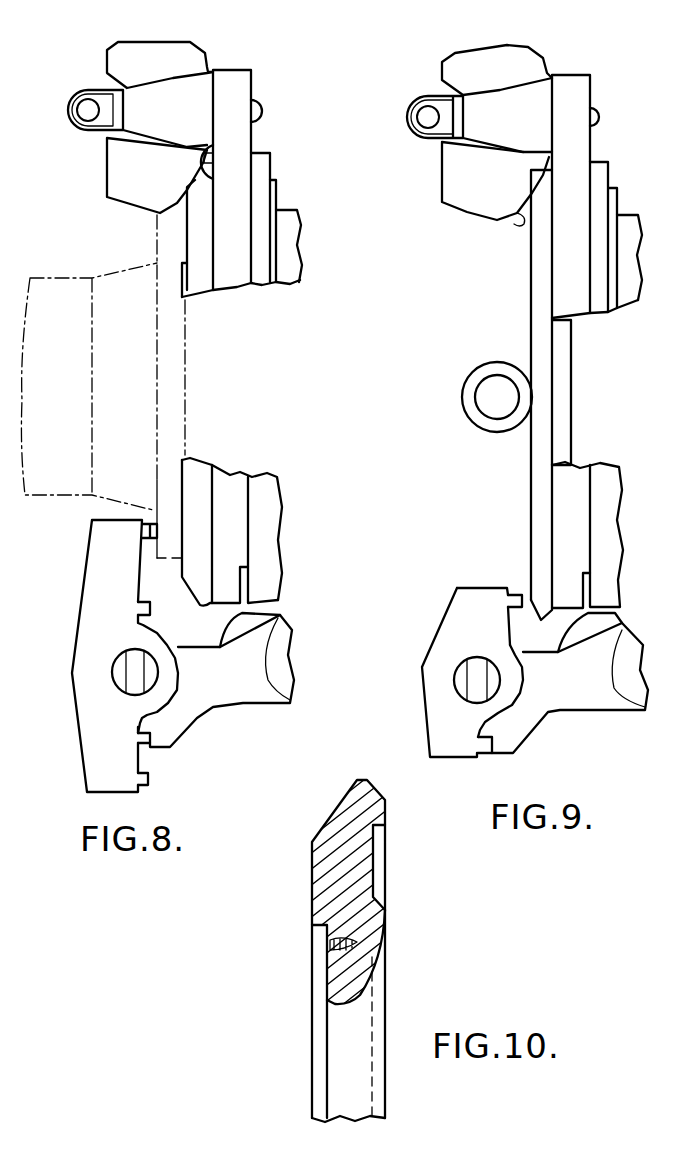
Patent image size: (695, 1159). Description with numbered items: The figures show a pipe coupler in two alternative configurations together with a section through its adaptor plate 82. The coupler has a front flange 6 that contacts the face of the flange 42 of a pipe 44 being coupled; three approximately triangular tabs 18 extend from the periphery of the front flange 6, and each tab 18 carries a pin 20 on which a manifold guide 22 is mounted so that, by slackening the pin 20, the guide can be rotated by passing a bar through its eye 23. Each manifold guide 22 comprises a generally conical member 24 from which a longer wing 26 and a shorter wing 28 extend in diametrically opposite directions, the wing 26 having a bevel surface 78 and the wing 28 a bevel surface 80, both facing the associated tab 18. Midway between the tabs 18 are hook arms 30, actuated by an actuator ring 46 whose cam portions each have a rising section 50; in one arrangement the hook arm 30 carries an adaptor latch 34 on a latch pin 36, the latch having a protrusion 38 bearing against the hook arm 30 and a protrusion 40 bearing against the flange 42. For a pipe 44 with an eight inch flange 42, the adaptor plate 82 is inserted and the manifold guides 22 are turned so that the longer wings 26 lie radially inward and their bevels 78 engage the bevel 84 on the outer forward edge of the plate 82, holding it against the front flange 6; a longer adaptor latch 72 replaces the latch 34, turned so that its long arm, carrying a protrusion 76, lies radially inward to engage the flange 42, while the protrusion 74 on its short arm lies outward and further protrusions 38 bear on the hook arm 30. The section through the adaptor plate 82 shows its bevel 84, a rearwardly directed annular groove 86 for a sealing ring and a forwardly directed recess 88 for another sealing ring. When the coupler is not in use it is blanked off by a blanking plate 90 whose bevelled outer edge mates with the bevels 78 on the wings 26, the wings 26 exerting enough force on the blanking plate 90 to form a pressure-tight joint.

In FIG. 8, the front flange 6 is at (223, 558).
In FIG. 9, the front flange 6 is at (567, 540).
In FIG. 8, the tab 18 is at (233, 80).
In FIG. 9, the tab 18 is at (573, 80).
In FIG. 8, the pin 20 is at (260, 110).
In FIG. 9, the pin 20 is at (598, 118).
In FIG. 8, the manifold guide 22 is at (100, 58).
In FIG. 9, the manifold guide 22 is at (430, 70).
In FIG. 8, the eye 23 is at (83, 110).
In FIG. 9, the eye 23 is at (420, 117).
In FIG. 8, the conical member 24 is at (175, 77).
In FIG. 9, the conical member 24 is at (507, 92).
In FIG. 8, the wing 26 is at (113, 183).
In FIG. 9, the wing 26 is at (453, 183).
In FIG. 8, the wing 28 is at (140, 55).
In FIG. 9, the wing 28 is at (477, 57).
In FIG. 8, the hook arm 30 is at (257, 683).
In FIG. 9, the hook arm 30 is at (588, 697).
In FIG. 9, the adaptor latch 34 is at (433, 665).
In FIG. 8, the latch pin 36 is at (130, 675).
In FIG. 9, the latch pin 36 is at (475, 680).
In FIG. 8, the protrusion 38 is at (138, 610).
In FIG. 9, the protrusion 38 is at (487, 750).
In FIG. 9, the protrusion 40 is at (508, 602).
In FIG. 8, the flange 42 is at (157, 240).
In FIG. 8, the pipe 44 is at (65, 468).
In FIG. 8, the actuator ring 46 is at (297, 257).
In FIG. 9, the actuator ring 46 is at (629, 257).
In FIG. 8, the rising section 50 is at (260, 198).
In FIG. 9, the rising section 50 is at (603, 237).
In FIG. 8, the adaptor latch 72 is at (97, 605).
In FIG. 8, the protrusion 74 is at (148, 780).
In FIG. 8, the protrusion 76 is at (140, 528).
In FIG. 8, the bevel surface 78 is at (213, 190).
In FIG. 9, the bevel surface 78 is at (523, 220).
In FIG. 8, the bevel surface 80 is at (200, 53).
In FIG. 9, the bevel surface 80 is at (545, 58).
In FIG. 8, the adaptor plate 82 is at (198, 198).
In FIG. 10, the adaptor plate 82 is at (353, 853).
In FIG. 8, the bevel 84 is at (213, 134).
In FIG. 10, the bevel 84 is at (347, 795).
In FIG. 10, the annular groove 86 is at (378, 887).
In FIG. 10, the recess 88 is at (323, 937).
In FIG. 9, the blanking plate 90 is at (543, 290).